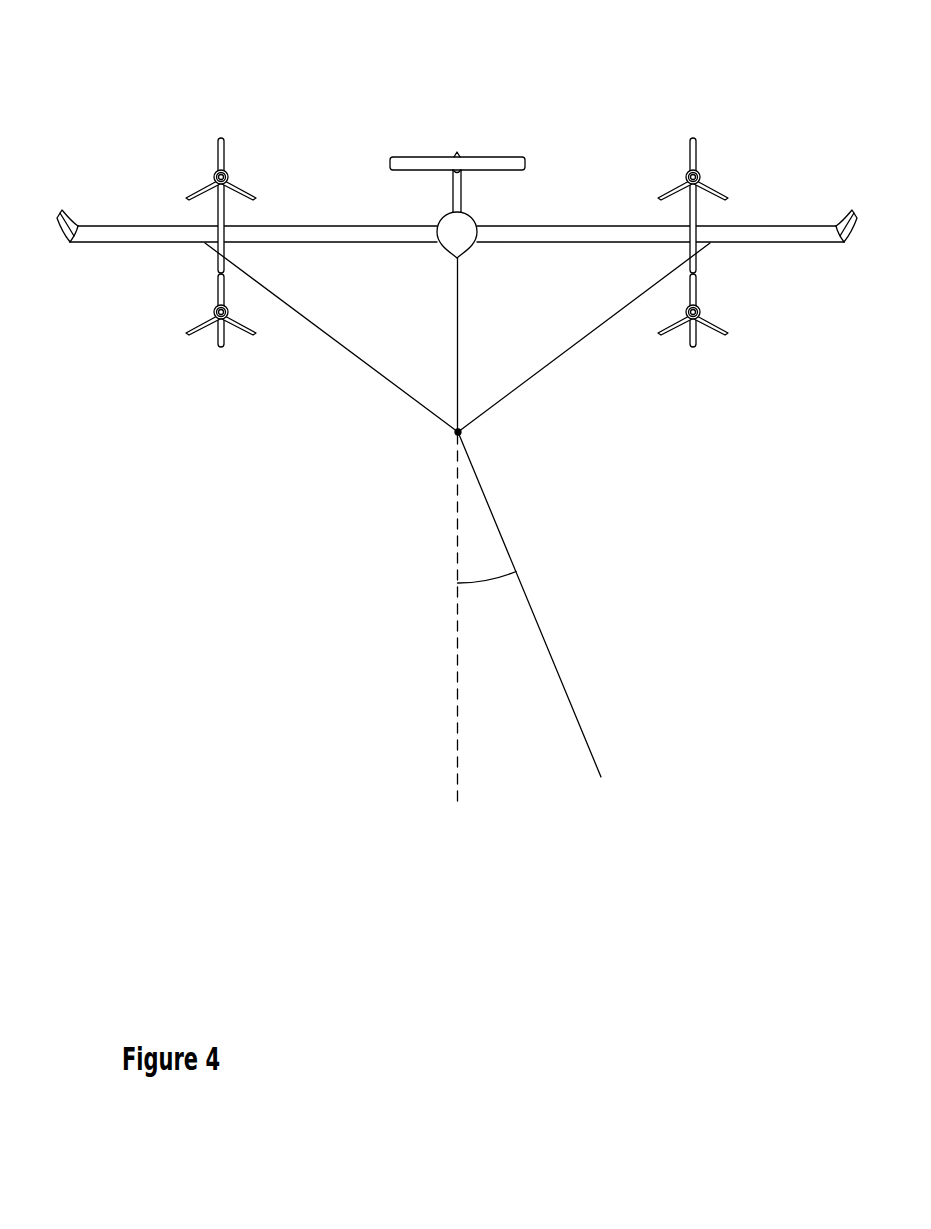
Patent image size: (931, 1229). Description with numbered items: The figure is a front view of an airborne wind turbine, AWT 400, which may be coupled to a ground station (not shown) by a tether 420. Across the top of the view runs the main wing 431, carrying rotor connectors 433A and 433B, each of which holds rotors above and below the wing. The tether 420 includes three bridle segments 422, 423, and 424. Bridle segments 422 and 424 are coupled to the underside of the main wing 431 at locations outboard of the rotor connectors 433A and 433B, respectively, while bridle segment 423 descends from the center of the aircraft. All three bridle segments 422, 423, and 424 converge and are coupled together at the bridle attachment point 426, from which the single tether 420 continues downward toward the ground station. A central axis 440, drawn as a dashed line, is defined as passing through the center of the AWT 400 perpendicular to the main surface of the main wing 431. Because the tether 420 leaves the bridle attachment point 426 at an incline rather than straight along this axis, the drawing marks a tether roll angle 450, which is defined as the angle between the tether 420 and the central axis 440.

The AWT 400 is at (280, 46).
The main wing 431 is at (322, 224).
The rotor connector 433A is at (698, 203).
The rotor connector 433B is at (217, 218).
The bridle segment 423 is at (458, 302).
The bridle segment 424 is at (379, 373).
The bridle segment 422 is at (577, 347).
The bridle attachment point 426 is at (453, 435).
The tether 420 is at (563, 686).
The central axis 440 is at (457, 703).
The tether roll angle 450 is at (487, 582).